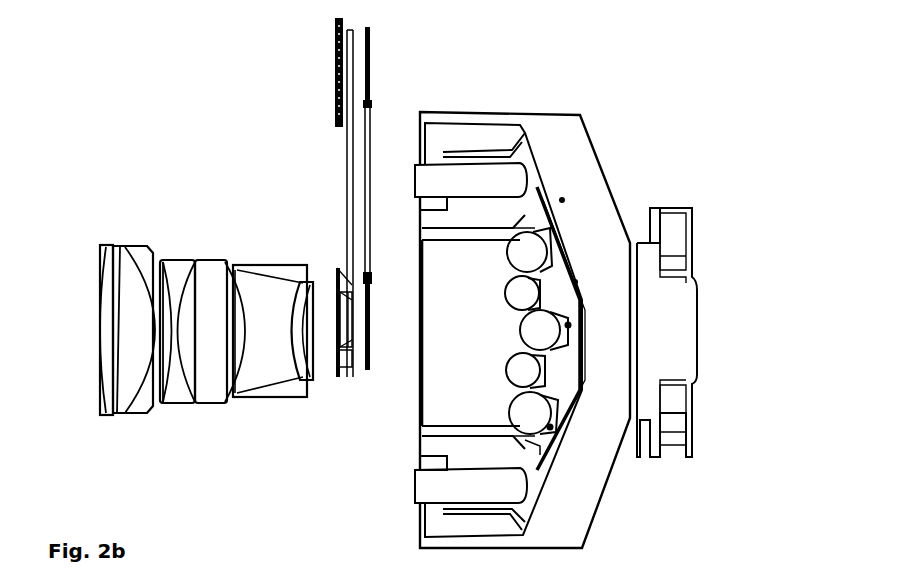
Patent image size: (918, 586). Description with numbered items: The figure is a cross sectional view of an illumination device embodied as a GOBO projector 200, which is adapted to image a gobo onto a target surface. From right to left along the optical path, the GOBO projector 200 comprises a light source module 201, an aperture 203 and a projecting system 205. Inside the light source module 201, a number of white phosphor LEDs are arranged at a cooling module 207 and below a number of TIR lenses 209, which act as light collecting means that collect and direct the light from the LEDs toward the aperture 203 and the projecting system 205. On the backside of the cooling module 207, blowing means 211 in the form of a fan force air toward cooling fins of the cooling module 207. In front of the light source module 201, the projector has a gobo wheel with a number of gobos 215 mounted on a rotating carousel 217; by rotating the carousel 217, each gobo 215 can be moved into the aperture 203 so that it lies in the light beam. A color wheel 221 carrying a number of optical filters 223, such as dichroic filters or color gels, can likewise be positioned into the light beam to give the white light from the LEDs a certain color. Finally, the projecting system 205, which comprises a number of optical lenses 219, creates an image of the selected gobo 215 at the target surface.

The GOBO projector 200 is at (197, 130).
The light source module 201 is at (593, 106).
The aperture 203 is at (351, 380).
The projecting system 205 is at (147, 233).
The cooling module 207 is at (572, 472).
The TIR lenses 209 is at (530, 403).
The blowing means 211 is at (678, 305).
The gobos 215 is at (337, 267).
The rotating carousel 217 is at (352, 203).
The optical lenses 219 is at (300, 363).
The color wheel 221 is at (370, 127).
The optical filters 223 is at (370, 62).